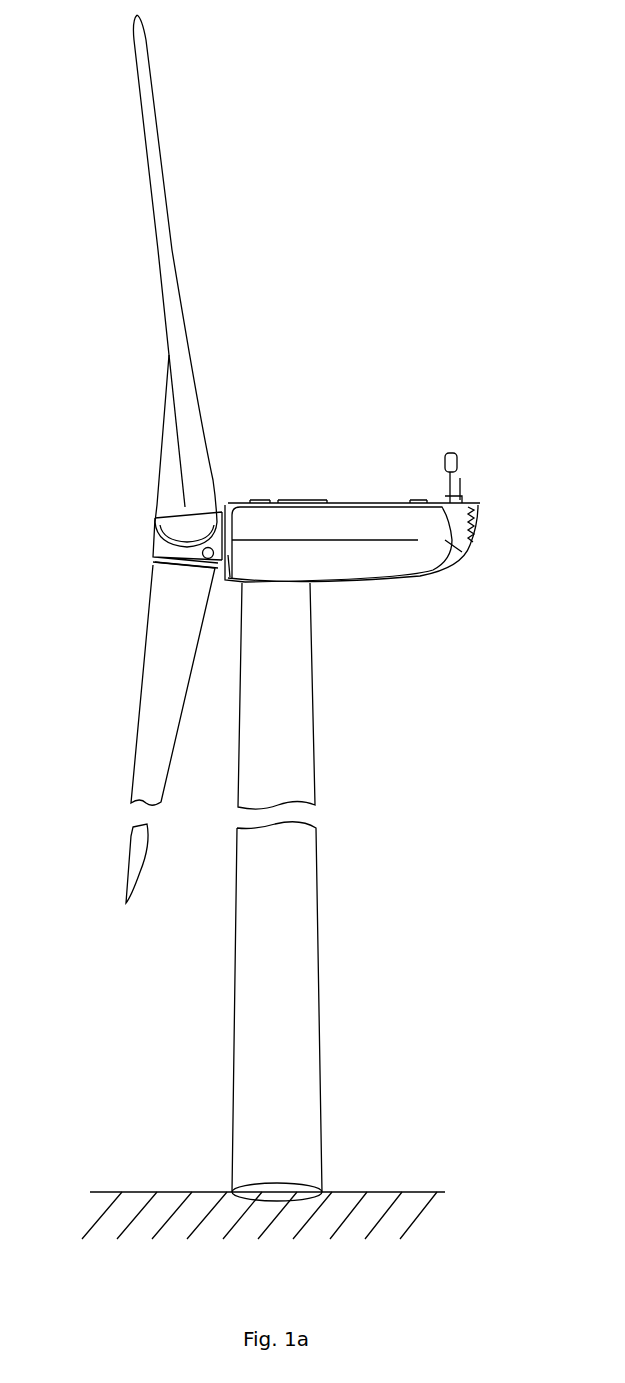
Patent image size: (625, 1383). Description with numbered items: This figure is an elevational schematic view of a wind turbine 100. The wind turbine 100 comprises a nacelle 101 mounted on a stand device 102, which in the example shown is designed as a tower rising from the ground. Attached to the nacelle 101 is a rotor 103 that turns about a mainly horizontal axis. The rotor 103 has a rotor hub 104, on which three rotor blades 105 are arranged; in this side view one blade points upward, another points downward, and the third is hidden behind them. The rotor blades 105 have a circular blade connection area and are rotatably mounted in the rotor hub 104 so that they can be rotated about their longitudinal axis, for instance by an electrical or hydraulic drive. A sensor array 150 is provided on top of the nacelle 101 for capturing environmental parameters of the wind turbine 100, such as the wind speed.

The wind turbine 100 is at (287, 365).
The nacelle 101 is at (357, 530).
The stand device 102 is at (298, 867).
The rotor 103 is at (135, 518).
The rotor hub 104 is at (158, 550).
The rotor blades 105 is at (155, 715).
The sensor array 150 is at (458, 452).